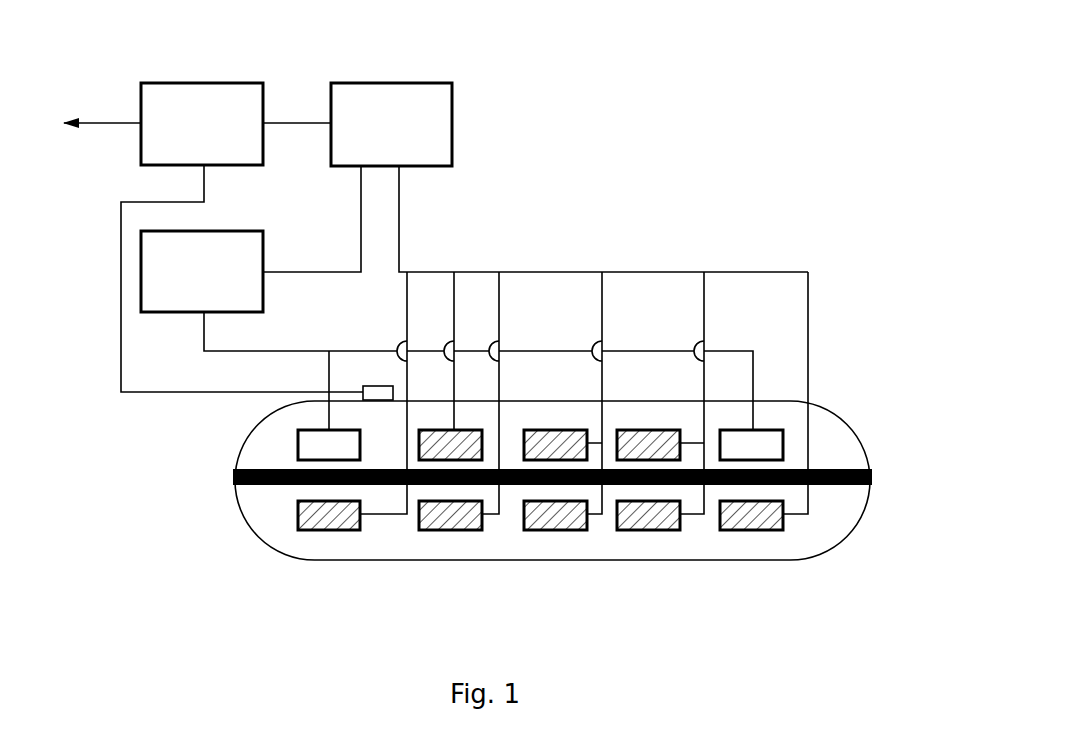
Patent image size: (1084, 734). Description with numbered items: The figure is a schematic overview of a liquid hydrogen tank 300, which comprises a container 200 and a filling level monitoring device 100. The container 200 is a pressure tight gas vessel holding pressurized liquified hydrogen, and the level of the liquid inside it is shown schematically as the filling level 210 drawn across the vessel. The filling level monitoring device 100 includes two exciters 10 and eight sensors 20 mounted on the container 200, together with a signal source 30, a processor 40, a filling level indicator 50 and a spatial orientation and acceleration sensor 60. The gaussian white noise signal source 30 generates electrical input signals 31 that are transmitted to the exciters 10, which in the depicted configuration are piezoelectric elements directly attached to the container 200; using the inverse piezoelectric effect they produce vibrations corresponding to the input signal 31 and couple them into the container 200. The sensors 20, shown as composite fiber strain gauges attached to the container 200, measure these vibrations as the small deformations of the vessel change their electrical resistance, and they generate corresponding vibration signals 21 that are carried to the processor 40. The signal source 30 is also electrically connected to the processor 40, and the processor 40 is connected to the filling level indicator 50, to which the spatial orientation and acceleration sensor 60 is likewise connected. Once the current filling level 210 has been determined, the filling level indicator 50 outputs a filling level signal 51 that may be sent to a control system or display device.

The exciter 10 is at (296, 440).
The sensor 20 is at (469, 429).
The vibration signal 21 is at (589, 264).
The signal source 30 is at (163, 292).
The input signal 31 is at (282, 268).
The processor 40 is at (432, 120).
The filling level indicator 50 is at (218, 112).
The filling level signal 51 is at (121, 115).
The spatial orientation and acceleration sensor 60 is at (376, 403).
The filling level monitoring device 100 is at (718, 224).
The container 200 is at (279, 522).
The filling level 210 is at (876, 477).
The hydrogen tank 300 is at (733, 81).